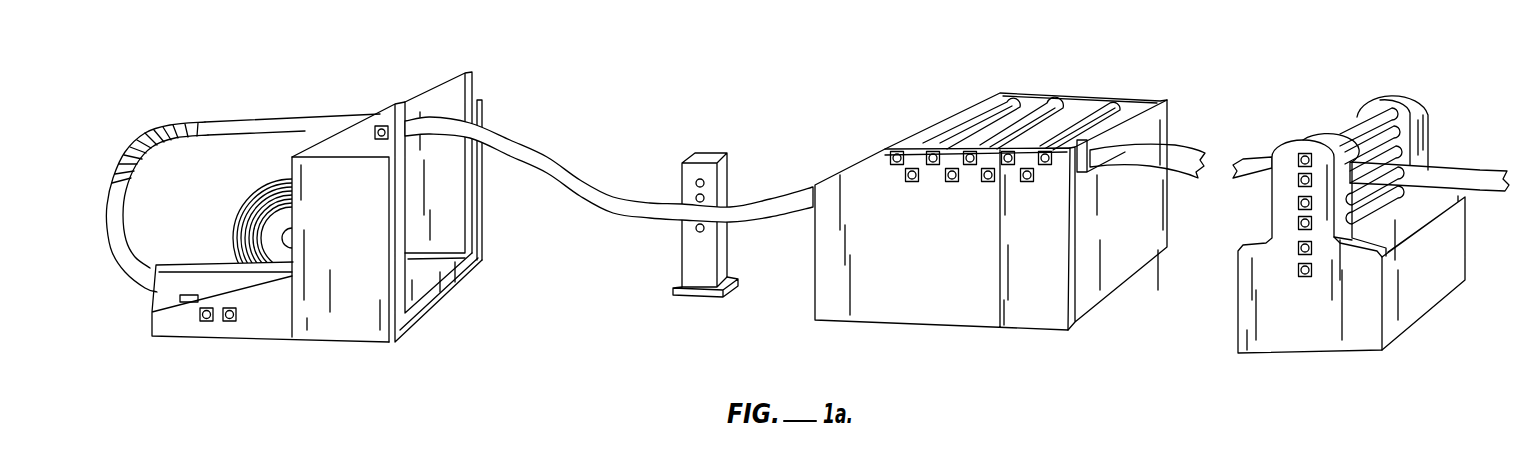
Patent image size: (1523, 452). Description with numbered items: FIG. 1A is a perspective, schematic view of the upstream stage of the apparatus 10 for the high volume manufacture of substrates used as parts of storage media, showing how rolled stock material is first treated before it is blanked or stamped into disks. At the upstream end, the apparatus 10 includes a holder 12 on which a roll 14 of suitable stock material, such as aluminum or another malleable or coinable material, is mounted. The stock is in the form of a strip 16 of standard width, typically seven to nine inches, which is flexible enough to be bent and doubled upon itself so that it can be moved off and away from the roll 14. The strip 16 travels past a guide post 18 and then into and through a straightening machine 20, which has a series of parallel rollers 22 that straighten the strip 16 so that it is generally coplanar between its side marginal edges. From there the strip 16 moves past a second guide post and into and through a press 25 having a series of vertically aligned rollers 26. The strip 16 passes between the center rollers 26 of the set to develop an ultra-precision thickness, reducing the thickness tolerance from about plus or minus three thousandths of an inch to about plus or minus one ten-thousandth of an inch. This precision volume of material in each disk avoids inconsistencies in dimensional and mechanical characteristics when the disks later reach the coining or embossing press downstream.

The apparatus 10 is at (592, 70).
The holder 12 is at (457, 70).
The roll 14 is at (266, 189).
The strip 16 is at (197, 126).
The guide post 18 is at (730, 171).
The straightening machine 20 is at (1072, 88).
The parallel rollers 22 is at (1008, 125).
The press 25 is at (1437, 95).
The vertically aligned rollers 26 is at (1373, 118).